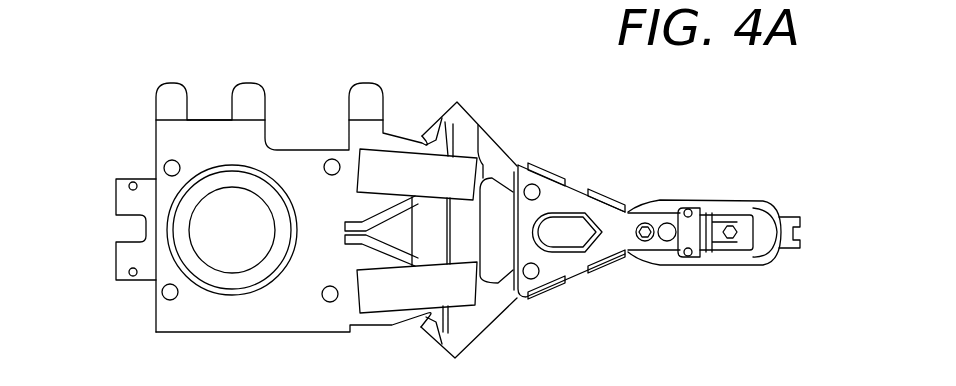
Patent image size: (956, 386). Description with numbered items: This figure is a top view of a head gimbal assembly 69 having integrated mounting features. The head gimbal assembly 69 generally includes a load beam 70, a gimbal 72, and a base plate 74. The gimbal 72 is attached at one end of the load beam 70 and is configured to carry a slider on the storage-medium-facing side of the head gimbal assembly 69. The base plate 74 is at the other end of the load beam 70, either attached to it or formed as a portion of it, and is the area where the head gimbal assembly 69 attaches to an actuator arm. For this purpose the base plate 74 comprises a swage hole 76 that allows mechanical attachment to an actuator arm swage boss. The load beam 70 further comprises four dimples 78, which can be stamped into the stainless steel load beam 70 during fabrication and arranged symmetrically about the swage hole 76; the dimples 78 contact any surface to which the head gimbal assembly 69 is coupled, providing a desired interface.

The head gimbal assembly 69 is at (590, 111).
The load beam 70 is at (565, 192).
The gimbal 72 is at (777, 203).
The base plate 74 is at (153, 296).
The swage hole 76 is at (190, 233).
The dimples 78 is at (165, 163).